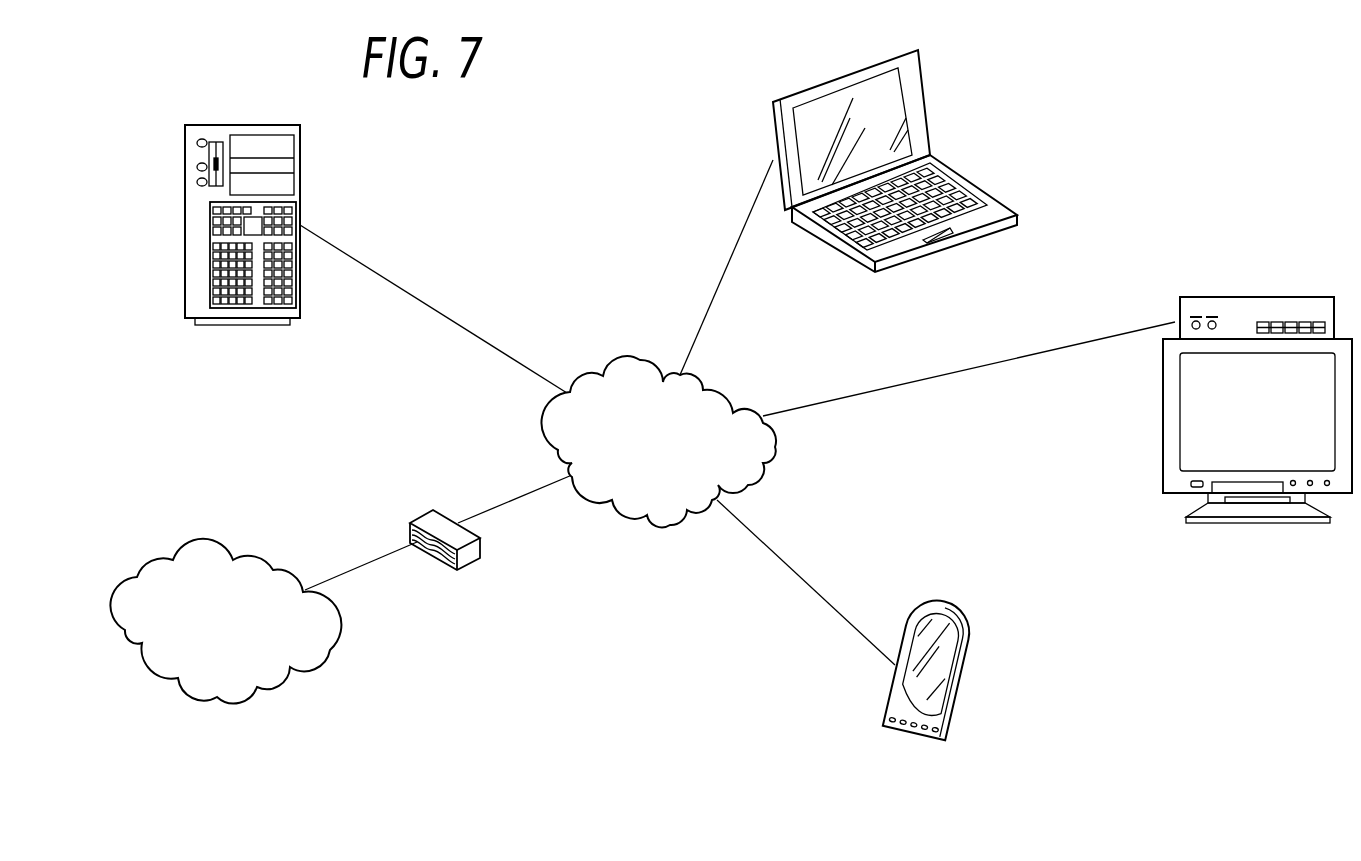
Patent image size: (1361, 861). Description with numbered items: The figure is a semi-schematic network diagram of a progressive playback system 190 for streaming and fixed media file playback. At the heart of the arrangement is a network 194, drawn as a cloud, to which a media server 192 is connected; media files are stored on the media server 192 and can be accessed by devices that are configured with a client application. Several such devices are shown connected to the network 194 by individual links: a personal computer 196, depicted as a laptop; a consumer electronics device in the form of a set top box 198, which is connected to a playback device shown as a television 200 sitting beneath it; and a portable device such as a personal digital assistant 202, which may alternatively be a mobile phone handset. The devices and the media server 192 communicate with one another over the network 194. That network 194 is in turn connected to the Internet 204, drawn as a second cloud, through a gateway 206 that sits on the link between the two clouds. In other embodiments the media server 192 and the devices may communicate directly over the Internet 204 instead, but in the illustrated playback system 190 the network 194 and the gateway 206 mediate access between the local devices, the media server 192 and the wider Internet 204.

The playback system 190 is at (524, 684).
The media server 192 is at (185, 222).
The network 194 is at (630, 360).
The personal computer 196 is at (927, 100).
The set top box 198 is at (1256, 297).
The television 200 is at (1256, 523).
The personal digital assistant 202 is at (967, 688).
The Internet 204 is at (165, 558).
The gateway 206 is at (422, 518).